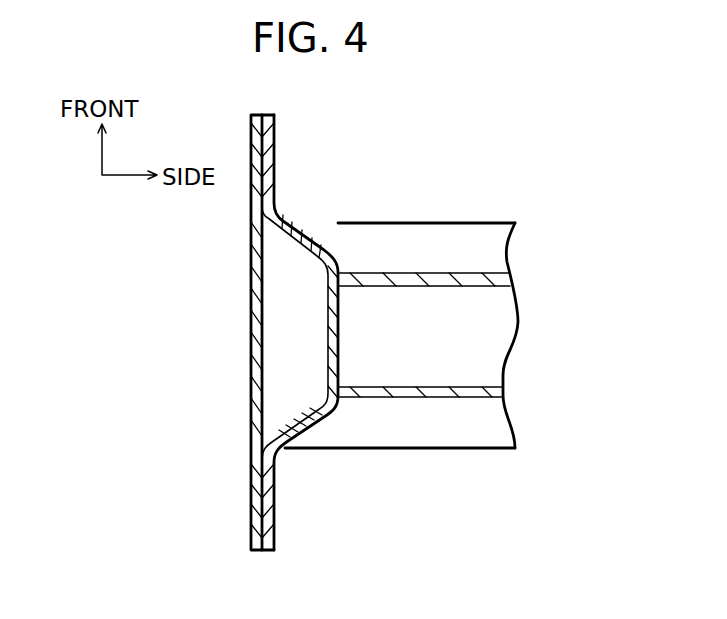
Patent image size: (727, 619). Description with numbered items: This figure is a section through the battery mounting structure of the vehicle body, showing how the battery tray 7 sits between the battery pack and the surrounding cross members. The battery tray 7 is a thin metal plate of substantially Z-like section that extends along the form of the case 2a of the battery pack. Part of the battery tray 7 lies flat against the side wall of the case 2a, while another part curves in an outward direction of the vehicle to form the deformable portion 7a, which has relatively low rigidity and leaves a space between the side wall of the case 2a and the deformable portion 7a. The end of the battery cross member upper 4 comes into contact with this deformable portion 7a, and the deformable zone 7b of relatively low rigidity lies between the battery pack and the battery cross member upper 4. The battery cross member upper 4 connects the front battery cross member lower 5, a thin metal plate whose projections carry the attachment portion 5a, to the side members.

The case 2a is at (252, 295).
The battery tray 7 is at (319, 332).
The deformable zone 7b is at (328, 355).
The deformable portion 7a is at (338, 342).
The front battery cross member lower 5 is at (401, 327).
The attachment portion 5a is at (428, 430).
The battery cross member upper 4 is at (481, 409).